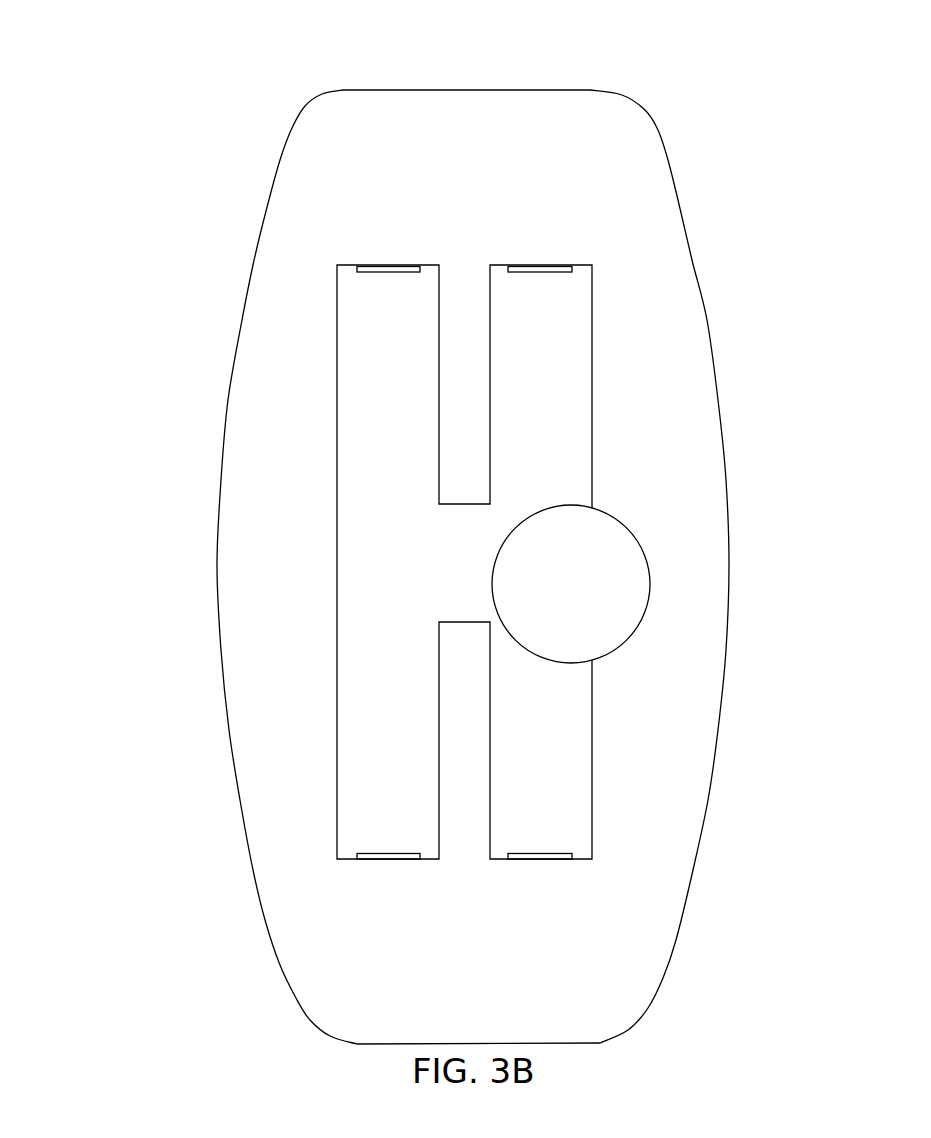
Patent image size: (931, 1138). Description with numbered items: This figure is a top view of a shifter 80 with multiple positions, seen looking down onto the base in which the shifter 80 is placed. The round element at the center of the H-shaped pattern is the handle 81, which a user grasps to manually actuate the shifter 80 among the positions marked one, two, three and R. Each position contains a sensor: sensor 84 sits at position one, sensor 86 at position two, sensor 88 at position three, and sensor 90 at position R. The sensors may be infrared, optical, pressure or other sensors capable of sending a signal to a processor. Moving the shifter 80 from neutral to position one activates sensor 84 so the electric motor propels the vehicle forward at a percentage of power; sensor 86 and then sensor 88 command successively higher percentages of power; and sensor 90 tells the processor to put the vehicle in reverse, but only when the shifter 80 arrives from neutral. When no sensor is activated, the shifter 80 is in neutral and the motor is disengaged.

The shifter 80 is at (150, 72).
The handle 81 is at (631, 532).
The sensor 84 is at (377, 268).
The sensor 88 is at (553, 270).
The sensor 86 is at (383, 855).
The sensor 90 is at (553, 856).